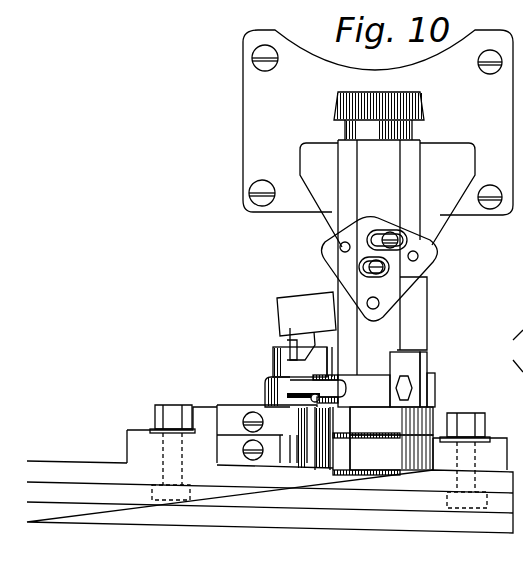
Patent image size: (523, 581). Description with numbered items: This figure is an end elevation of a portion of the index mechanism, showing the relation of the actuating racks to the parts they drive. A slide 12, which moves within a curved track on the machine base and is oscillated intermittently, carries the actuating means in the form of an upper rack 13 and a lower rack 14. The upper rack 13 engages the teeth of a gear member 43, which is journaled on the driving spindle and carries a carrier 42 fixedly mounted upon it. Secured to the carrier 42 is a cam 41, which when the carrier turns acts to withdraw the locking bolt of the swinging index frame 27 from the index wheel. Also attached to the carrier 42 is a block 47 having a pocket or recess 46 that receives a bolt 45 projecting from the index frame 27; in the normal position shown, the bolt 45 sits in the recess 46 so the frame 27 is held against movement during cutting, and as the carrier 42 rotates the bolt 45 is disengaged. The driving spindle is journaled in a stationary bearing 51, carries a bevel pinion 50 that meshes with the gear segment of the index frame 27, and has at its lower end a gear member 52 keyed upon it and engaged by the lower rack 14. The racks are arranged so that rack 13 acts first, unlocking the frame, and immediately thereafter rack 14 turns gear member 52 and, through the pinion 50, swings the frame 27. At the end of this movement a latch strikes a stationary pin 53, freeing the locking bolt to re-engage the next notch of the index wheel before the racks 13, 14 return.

The slide 12 is at (245, 475).
The rack 13 is at (320, 420).
The rack 14 is at (317, 463).
The swinging index frame 27 is at (306, 326).
The cam 41 is at (403, 365).
The carrier 42 is at (364, 391).
The gear member 43 is at (391, 421).
The bolt 45 is at (297, 342).
The recess 46 is at (300, 359).
The block 47 is at (300, 367).
The bevel pinion 50 is at (420, 104).
The stationary bearing 51 is at (382, 328).
The gear member 52 is at (383, 451).
The stationary pin 53 is at (341, 250).